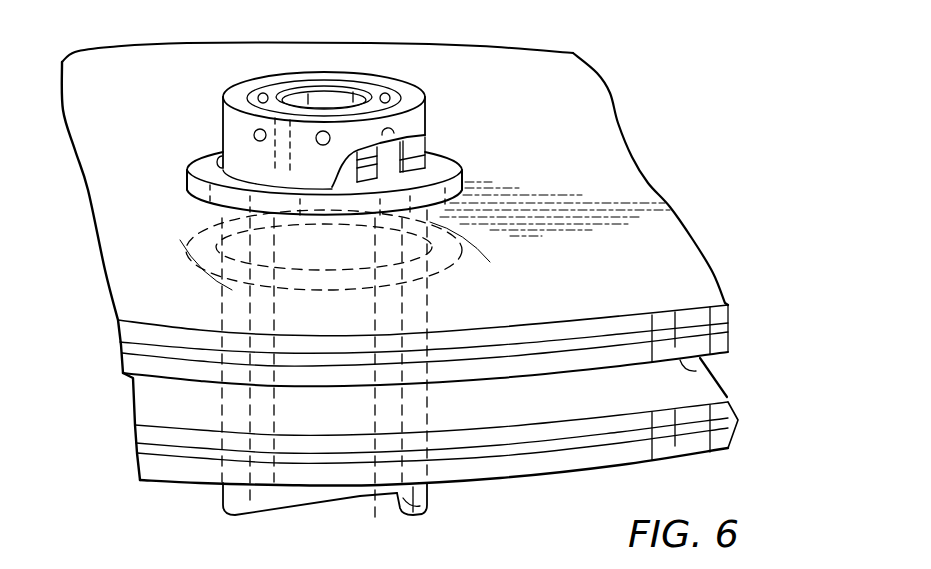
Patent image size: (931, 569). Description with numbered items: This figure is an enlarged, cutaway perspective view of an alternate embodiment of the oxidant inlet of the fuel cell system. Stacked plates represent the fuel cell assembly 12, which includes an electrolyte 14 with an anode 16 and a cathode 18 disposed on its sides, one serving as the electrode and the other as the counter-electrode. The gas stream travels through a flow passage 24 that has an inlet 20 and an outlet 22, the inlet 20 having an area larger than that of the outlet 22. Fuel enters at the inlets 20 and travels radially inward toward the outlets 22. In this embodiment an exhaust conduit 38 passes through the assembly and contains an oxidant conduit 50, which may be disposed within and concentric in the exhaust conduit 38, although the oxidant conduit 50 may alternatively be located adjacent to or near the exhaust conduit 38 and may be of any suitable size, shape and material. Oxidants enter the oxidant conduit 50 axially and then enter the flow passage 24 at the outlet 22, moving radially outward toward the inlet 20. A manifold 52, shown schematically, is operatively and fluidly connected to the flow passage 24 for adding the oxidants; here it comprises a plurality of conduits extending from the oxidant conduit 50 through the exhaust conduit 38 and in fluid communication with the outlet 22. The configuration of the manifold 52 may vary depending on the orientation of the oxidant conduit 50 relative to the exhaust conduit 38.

The fuel cell assembly 12 is at (598, 100).
The electrolyte 14 is at (120, 342).
The anode 16 is at (118, 320).
The cathode 18 is at (122, 366).
The inlet 20 is at (707, 370).
The outlet 22 is at (228, 288).
The flow passage 24 is at (498, 410).
The exhaust conduit 38 is at (410, 88).
The oxidant conduit 50 is at (372, 90).
The manifold 52 is at (455, 155).